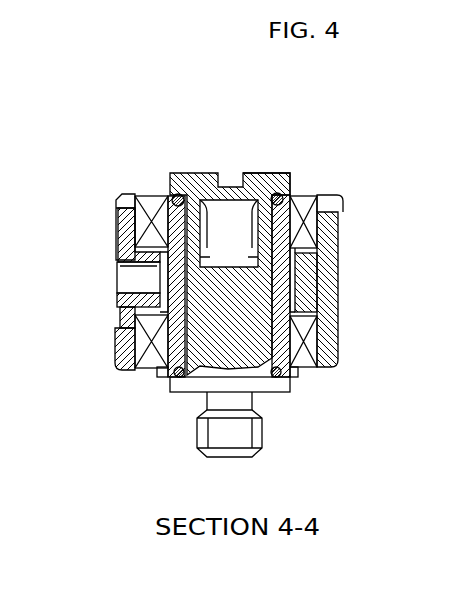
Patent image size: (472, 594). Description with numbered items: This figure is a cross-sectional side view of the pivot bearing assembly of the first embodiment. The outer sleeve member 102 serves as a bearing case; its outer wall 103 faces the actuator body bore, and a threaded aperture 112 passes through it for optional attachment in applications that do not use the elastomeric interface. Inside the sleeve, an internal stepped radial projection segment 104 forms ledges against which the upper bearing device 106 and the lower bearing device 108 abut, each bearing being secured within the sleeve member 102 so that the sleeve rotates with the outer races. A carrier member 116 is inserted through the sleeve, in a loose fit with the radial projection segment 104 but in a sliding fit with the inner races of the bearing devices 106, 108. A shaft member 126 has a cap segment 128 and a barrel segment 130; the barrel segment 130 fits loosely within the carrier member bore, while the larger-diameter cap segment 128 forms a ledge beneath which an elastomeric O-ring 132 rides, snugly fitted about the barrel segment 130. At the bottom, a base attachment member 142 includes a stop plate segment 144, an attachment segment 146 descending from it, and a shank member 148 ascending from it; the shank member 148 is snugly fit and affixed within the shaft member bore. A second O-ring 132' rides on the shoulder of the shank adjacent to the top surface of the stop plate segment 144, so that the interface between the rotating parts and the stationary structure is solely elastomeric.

The cap segment 128 is at (184, 172).
The shaft member 126 is at (287, 172).
The upper bearing device 106 is at (167, 197).
The outer wall 103 is at (123, 220).
The O-ring 132 is at (303, 180).
The threaded aperture 112 is at (135, 270).
The radial projection segment 104 is at (118, 307).
The barrel segment 130 is at (197, 338).
The shank member 148 is at (312, 331).
The outer sleeve member 102 is at (333, 292).
The carrier member 116 is at (292, 278).
The lower bearing device 108 is at (300, 368).
The O-ring 132' is at (302, 396).
The stop plate segment 144 is at (180, 385).
The base attachment member 142 is at (217, 398).
The attachment segment 146 is at (263, 435).